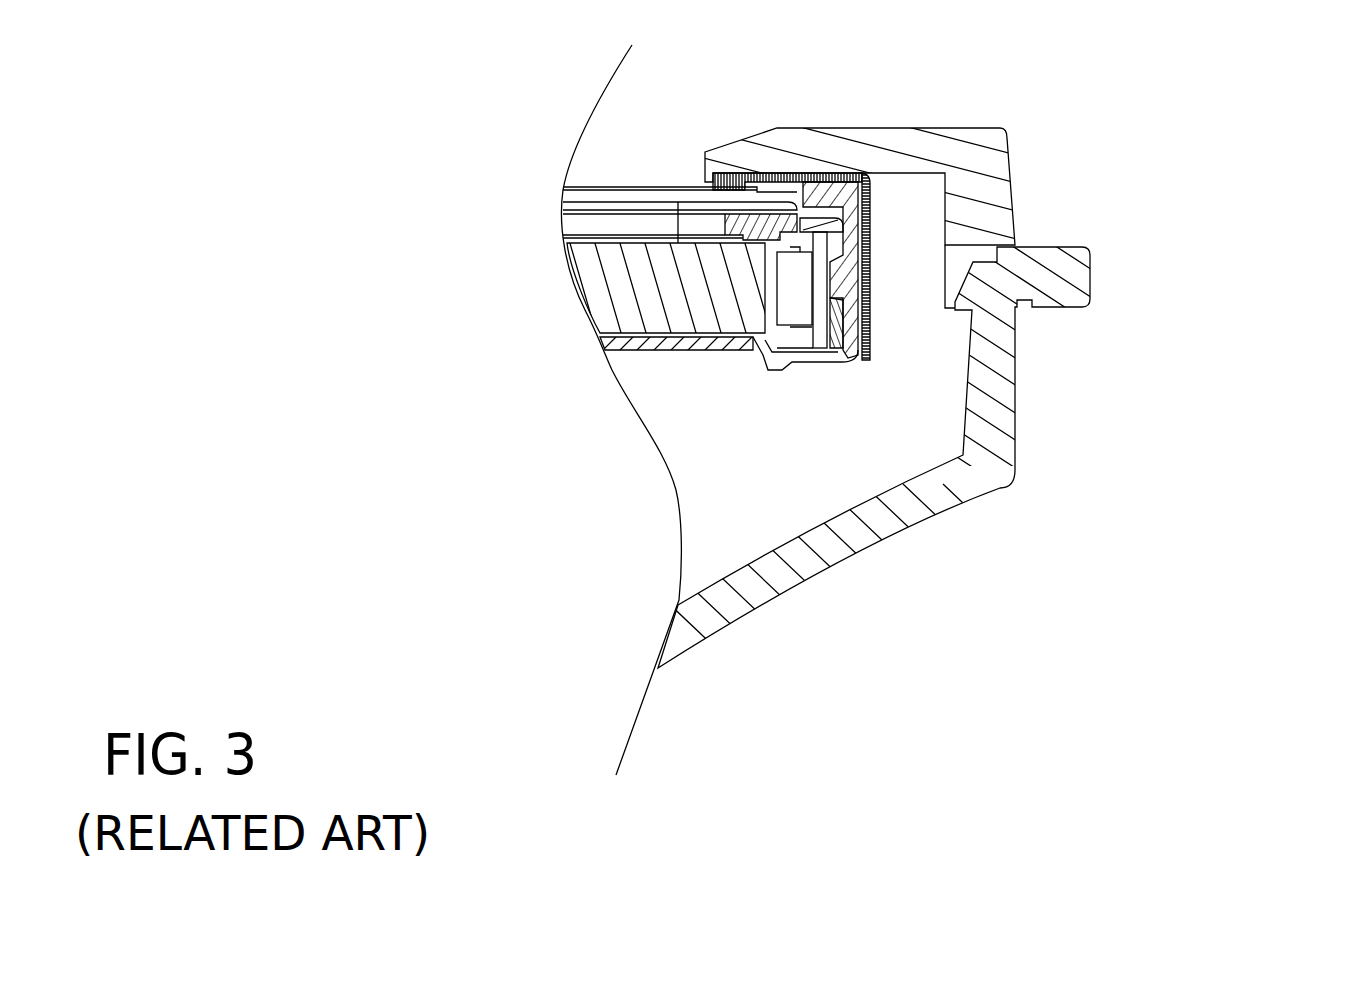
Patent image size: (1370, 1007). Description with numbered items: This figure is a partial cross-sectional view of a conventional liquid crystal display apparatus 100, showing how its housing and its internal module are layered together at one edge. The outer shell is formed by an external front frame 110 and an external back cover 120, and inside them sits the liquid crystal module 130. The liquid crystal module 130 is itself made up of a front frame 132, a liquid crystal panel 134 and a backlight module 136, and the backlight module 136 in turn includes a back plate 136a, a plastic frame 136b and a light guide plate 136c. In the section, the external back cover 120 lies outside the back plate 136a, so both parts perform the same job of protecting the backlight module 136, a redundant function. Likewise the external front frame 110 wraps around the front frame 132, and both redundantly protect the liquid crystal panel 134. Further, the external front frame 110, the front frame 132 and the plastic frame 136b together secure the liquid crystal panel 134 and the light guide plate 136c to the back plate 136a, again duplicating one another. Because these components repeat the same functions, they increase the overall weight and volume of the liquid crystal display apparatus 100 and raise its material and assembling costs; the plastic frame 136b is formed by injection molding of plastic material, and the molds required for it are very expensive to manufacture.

The liquid crystal display apparatus 100 is at (1362, 685).
The external front frame 110 is at (1004, 174).
The external back cover 120 is at (1005, 402).
The liquid crystal module 130 is at (852, 440).
The front frame 132 is at (865, 345).
The liquid crystal panel 134 is at (722, 340).
The backlight module 136 is at (793, 366).
The back plate 136a is at (843, 316).
The plastic frame 136b is at (850, 266).
The light guide plate 136c is at (647, 322).